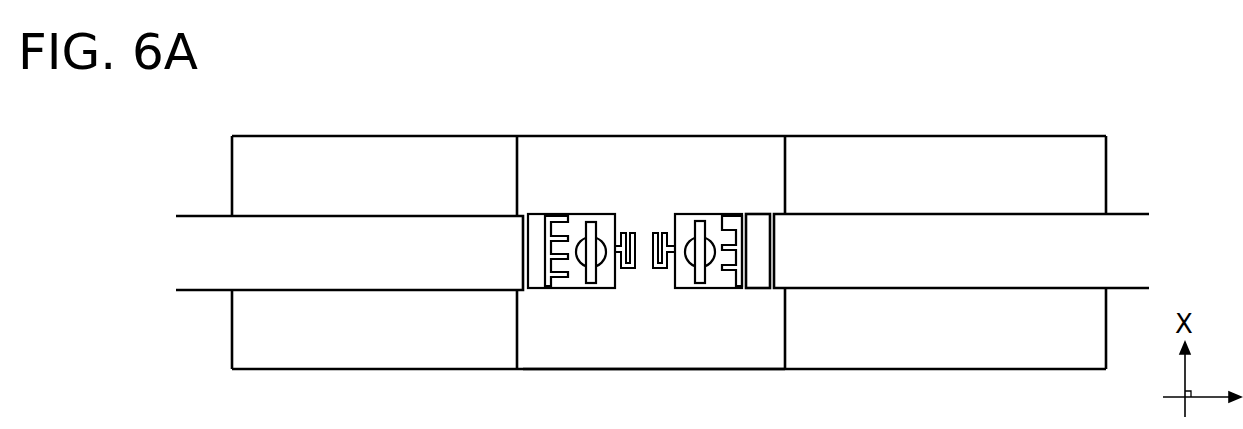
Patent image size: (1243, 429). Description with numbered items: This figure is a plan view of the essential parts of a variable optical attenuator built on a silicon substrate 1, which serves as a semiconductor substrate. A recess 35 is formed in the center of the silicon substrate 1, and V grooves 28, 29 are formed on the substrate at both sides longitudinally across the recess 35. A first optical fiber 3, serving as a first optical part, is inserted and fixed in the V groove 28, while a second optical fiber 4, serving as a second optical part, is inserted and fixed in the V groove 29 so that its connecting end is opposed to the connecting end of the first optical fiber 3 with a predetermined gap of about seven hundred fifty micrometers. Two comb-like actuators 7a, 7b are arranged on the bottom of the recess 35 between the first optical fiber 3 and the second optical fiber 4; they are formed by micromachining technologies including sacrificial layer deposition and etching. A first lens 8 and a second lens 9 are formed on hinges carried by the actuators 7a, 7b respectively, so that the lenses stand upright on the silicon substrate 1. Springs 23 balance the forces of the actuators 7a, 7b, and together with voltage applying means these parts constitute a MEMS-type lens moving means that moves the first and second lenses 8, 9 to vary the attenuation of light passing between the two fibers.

The silicon substrate 1 is at (982, 350).
The first optical fiber 3 is at (392, 240).
The second optical fiber 4 is at (887, 240).
The comb-like actuator 7a is at (558, 288).
The comb-like actuator 7b is at (728, 288).
The first lens 8 is at (605, 264).
The second lens 9 is at (690, 266).
The springs 23 is at (622, 233).
The V groove 28 is at (297, 240).
The V groove 29 is at (998, 240).
The recess 35 is at (693, 360).